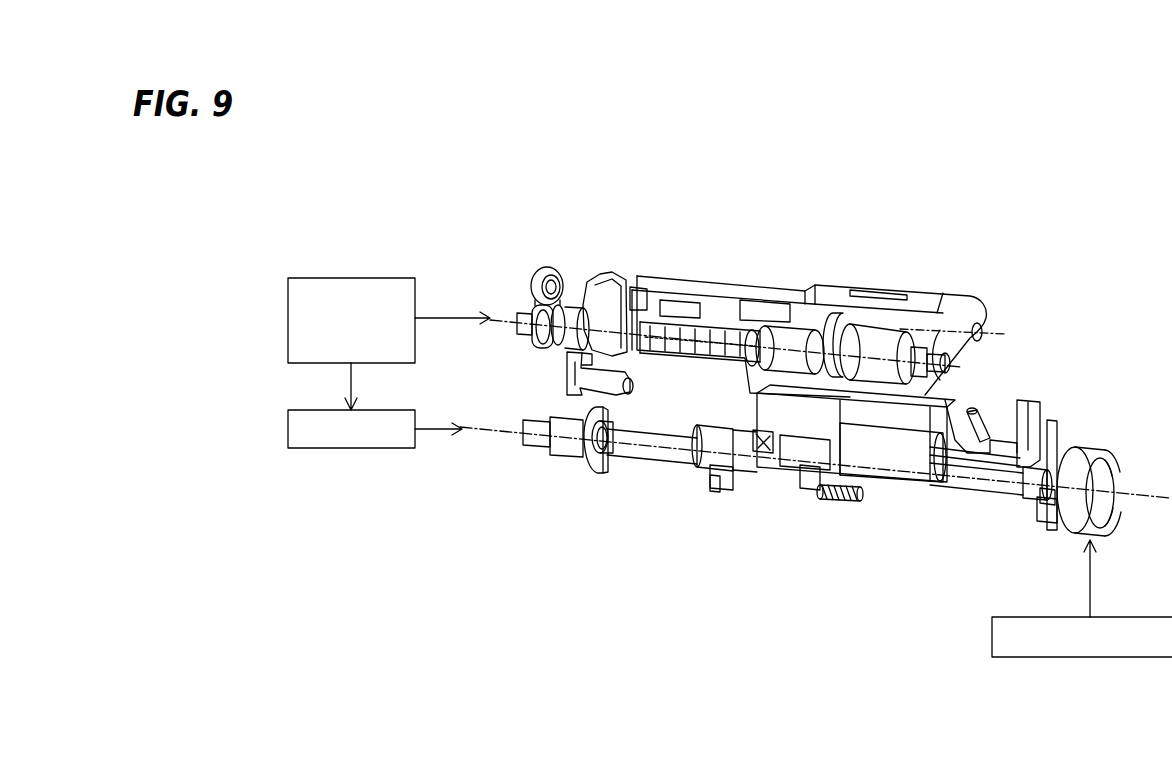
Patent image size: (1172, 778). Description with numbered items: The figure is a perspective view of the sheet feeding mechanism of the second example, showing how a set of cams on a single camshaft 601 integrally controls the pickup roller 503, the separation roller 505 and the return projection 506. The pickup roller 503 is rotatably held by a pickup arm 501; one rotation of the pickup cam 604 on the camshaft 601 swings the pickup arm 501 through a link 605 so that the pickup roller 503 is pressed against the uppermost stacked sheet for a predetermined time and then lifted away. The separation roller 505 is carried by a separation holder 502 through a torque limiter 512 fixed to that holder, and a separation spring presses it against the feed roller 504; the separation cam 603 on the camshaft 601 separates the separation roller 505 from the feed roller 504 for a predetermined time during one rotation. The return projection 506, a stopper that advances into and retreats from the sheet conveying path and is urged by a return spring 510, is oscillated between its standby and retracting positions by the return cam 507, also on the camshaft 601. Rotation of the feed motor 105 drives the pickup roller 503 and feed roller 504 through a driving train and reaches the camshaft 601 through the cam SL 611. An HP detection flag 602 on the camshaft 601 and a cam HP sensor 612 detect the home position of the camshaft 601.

The feed motor 105 is at (347, 278).
The cam SL 611 is at (353, 450).
The cam HP sensor 612 is at (1075, 657).
The pickup arm 501 is at (693, 285).
The separation holder 502 is at (897, 480).
The pickup roller 503 is at (925, 315).
The feed roller 504 is at (848, 325).
The separation roller 505 is at (880, 386).
The return projection 506 is at (743, 295).
The return cam 507 is at (710, 480).
The return spring 510 is at (837, 500).
The torque limiter 512 is at (940, 390).
The camshaft 601 is at (632, 450).
The HP detection flag 602 is at (1067, 525).
The separation cam 603 is at (767, 470).
The pickup cam 604 is at (590, 474).
The link 605 is at (563, 372).